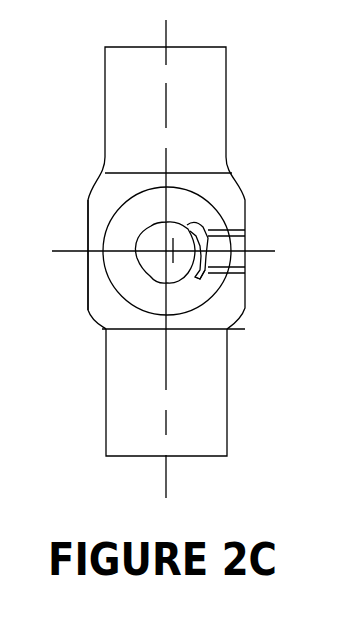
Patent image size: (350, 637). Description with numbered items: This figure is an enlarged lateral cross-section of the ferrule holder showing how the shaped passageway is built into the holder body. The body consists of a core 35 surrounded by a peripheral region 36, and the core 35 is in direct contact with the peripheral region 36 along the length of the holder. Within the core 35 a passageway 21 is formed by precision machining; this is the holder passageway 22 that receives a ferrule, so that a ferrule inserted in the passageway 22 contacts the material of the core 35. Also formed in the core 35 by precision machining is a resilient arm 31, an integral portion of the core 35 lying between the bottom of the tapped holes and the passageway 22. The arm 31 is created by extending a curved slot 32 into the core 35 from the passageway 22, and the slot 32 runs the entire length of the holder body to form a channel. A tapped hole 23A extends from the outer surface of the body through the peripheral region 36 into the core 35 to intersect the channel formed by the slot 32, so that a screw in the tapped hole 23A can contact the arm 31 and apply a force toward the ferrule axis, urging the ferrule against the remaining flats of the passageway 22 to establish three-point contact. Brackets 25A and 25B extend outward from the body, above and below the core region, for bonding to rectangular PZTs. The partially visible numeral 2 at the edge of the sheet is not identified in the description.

The passageway 21 is at (113, 188).
The holder passageway 22 is at (137, 245).
The tapped hole 23A is at (238, 242).
The bracket 25A is at (135, 90).
The bracket 25B is at (202, 410).
The resilient arm 31 is at (210, 235).
The curved slot 32 is at (205, 278).
The core 35 is at (148, 288).
The peripheral region 36 is at (105, 297).
The assembly 2 is at (349, 116).